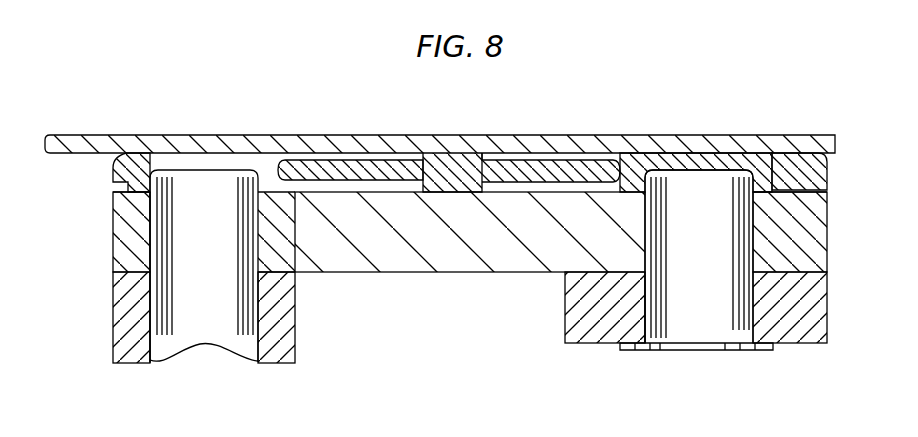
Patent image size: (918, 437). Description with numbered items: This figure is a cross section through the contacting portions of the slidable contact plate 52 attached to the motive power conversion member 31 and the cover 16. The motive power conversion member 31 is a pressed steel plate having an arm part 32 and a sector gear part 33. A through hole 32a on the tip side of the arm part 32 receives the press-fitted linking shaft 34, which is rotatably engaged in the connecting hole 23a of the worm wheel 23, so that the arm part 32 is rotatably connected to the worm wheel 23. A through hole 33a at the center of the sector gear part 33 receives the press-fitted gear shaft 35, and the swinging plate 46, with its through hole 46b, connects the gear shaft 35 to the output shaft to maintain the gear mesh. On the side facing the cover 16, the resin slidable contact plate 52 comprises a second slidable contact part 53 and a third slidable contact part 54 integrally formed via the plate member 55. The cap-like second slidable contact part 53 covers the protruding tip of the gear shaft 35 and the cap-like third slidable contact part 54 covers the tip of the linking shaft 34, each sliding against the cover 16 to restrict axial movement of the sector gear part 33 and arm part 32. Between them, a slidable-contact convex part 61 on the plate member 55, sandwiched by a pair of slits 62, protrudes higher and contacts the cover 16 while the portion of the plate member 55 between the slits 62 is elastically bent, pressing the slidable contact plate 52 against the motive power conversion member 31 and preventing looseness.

The cover 16 is at (85, 132).
The third slidable contact part 54 is at (193, 165).
The plate member 55 is at (285, 165).
The slidable-contact convex part 61 is at (437, 165).
The slits 62 is at (487, 165).
The second slidable contact part 53 is at (688, 160).
The slidable contact plate 52 is at (799, 158).
The motive power conversion member 31 is at (372, 278).
The arm part 32 is at (112, 245).
The through hole 32a is at (148, 213).
The worm wheel 23 is at (112, 283).
The connecting hole 23a is at (148, 313).
The linking shaft 34 is at (190, 307).
The gear shaft 35 is at (700, 320).
The swinging plate 46 is at (565, 347).
The through hole 46b is at (640, 300).
The sector gear part 33 is at (820, 215).
The through hole 33a is at (757, 243).